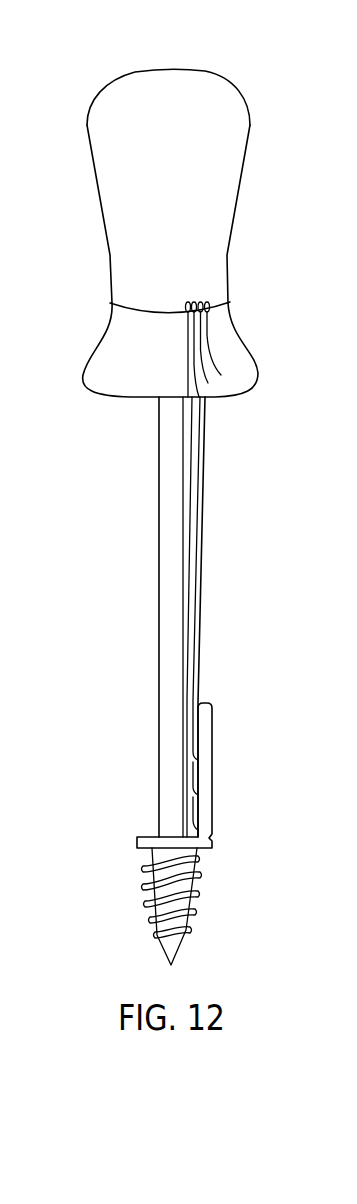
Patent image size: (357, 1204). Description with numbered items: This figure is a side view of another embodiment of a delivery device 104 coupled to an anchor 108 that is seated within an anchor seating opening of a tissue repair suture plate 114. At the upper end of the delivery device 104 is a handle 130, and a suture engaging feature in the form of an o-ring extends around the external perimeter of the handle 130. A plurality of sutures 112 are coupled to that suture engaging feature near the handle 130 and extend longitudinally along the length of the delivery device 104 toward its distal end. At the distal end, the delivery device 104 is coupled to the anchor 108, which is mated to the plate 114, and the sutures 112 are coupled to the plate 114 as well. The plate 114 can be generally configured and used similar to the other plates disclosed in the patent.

The delivery device 104 is at (269, 222).
The handle 130 is at (98, 193).
The anchor 108 is at (231, 302).
The sutures 112 is at (221, 561).
The plate 114 is at (212, 777).